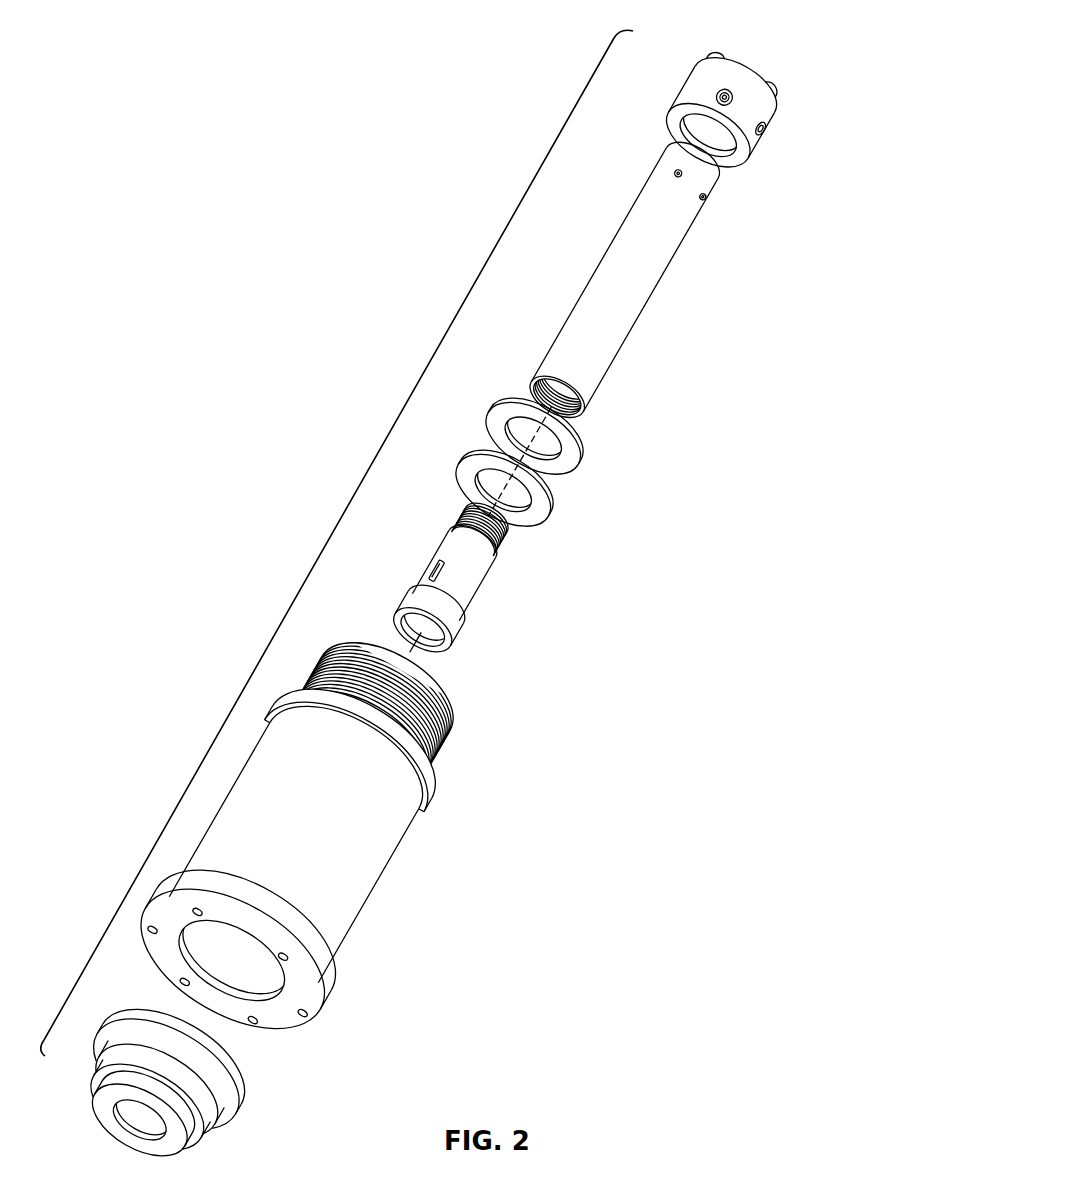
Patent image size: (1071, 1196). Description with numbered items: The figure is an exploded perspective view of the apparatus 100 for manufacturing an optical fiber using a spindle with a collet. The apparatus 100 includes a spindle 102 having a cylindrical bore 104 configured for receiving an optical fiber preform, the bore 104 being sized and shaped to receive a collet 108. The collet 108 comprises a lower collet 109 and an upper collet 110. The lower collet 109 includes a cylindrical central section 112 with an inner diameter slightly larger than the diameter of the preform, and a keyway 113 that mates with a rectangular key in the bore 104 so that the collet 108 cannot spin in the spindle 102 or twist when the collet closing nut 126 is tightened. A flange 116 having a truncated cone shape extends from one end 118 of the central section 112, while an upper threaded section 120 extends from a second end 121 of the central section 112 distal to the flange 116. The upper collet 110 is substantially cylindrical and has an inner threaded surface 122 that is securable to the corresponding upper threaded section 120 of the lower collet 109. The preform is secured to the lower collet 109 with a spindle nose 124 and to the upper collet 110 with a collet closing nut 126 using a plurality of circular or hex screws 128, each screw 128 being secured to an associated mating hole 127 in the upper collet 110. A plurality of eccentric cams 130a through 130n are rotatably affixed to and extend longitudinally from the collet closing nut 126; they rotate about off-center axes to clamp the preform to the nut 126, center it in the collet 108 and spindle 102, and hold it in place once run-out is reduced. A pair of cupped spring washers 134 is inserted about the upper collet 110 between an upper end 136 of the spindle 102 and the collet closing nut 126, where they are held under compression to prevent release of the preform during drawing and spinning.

The apparatus 100 is at (333, 548).
The spindle 102 is at (372, 897).
The cylindrical bore 104 is at (268, 980).
The collet 108 is at (637, 327).
The lower collet 109 is at (434, 575).
The upper collet 110 is at (587, 287).
The cylindrical central section 112 is at (458, 548).
The keyway 113 is at (441, 566).
The flange 116 is at (462, 638).
The one end 118 is at (407, 599).
The upper threaded section 120 is at (468, 512).
The second end 121 is at (505, 527).
The inner threaded surface 122 is at (536, 390).
The spindle nose 124 is at (240, 1097).
The collet closing nut 126 is at (775, 128).
The mating hole 127 is at (672, 172).
The screws 128 is at (720, 90).
The eccentric cam 130a is at (719, 53).
The eccentric cam 130n is at (775, 80).
The cupped spring washers 134 is at (583, 446).
The upper end 136 is at (458, 697).